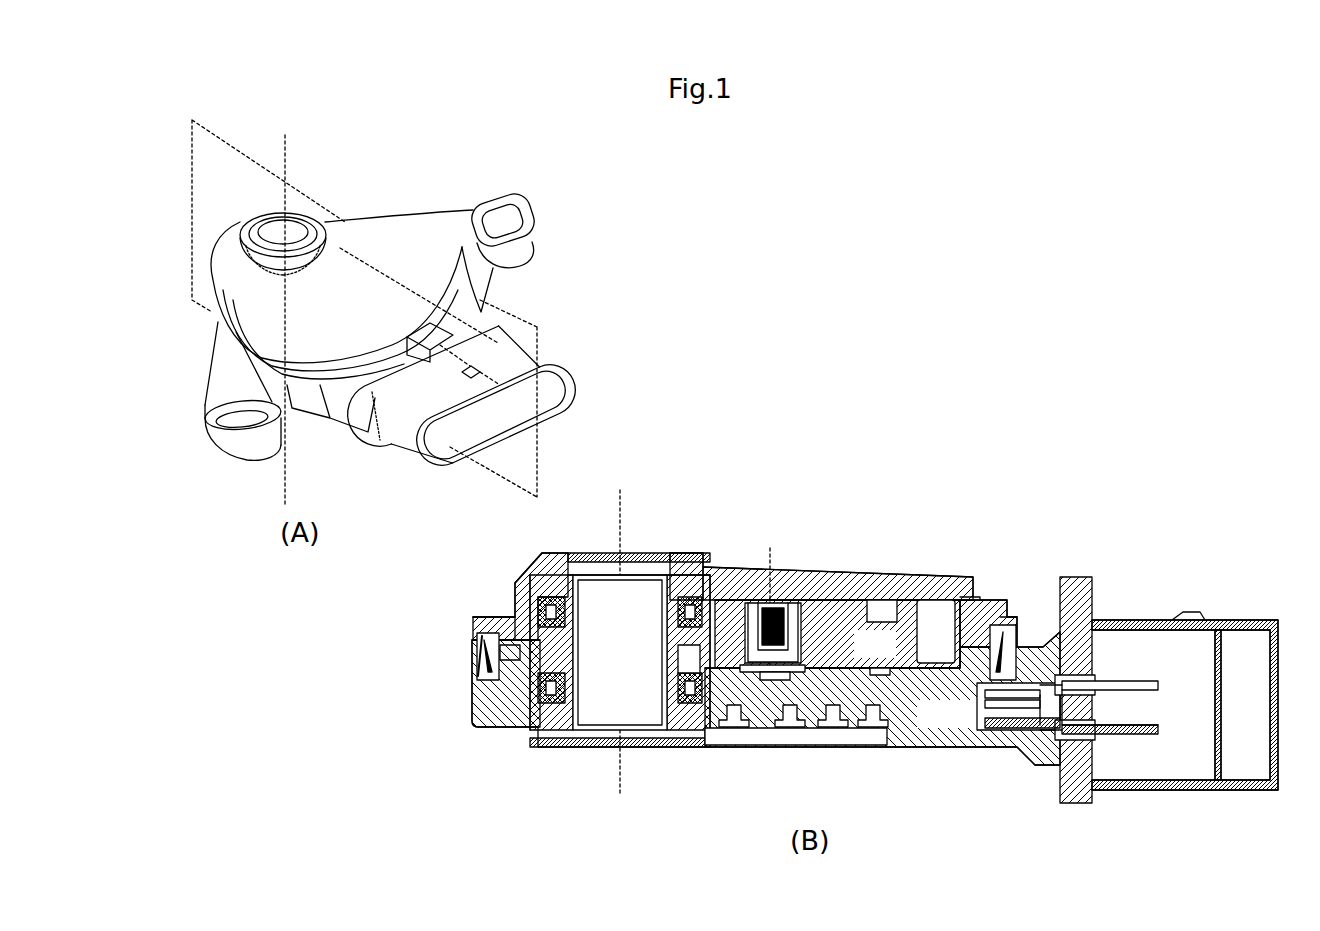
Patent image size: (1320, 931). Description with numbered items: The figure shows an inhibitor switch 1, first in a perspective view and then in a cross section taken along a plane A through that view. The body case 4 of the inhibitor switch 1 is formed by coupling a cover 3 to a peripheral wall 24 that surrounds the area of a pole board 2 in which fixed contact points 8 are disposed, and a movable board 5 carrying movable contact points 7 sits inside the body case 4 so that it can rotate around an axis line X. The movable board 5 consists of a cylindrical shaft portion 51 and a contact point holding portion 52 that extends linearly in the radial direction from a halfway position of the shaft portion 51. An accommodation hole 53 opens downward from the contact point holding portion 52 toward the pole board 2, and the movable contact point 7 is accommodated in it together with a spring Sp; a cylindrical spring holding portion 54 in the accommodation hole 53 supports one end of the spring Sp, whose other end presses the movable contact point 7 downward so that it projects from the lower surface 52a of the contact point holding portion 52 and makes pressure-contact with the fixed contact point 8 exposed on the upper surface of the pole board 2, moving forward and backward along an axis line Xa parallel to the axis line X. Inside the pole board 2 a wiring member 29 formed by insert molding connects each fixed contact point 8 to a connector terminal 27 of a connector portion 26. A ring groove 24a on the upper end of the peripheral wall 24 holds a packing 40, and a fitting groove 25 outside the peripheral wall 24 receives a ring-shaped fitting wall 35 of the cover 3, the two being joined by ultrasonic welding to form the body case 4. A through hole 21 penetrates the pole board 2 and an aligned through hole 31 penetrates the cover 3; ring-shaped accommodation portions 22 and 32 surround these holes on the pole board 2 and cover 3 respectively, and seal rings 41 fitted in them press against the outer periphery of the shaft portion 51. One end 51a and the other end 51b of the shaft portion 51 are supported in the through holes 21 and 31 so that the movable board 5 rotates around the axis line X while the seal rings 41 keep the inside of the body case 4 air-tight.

The inhibitor switch 1 is at (532, 174).
The pole board 2 is at (226, 352).
The cover 3 is at (216, 322).
The body case 4 is at (152, 322).
The movable board 5 is at (762, 502).
The movable contact point 7 is at (703, 652).
The fixed contact point 8 is at (780, 727).
The through hole 21 is at (660, 735).
The accommodation portion 22 is at (708, 735).
The peripheral wall 24 is at (522, 727).
The ring groove 24a is at (948, 714).
The fitting groove 25 is at (505, 660).
The connector portion 26 is at (520, 345).
The connector terminal 27 is at (1158, 686).
The wiring member 29 is at (1000, 750).
The through hole 31 is at (678, 560).
The accommodation portion 32 is at (527, 583).
The fitting wall 35 is at (485, 632).
The packing 40 is at (513, 600).
The seal ring 41 is at (572, 622).
The shaft portion 51 is at (690, 560).
The one end of the shaft portion 51a is at (582, 748).
The other end of the shaft portion 51b is at (578, 553).
The contact point holding portion 52 is at (742, 565).
The lower surface of the contact point holding portion 52a is at (885, 577).
The accommodation hole 53 is at (798, 630).
The spring holding portion 54 is at (808, 567).
The plane A is at (234, 142).
The axis line X is at (453, 452).
The axis line Xa is at (775, 598).
The spring Sp is at (875, 644).